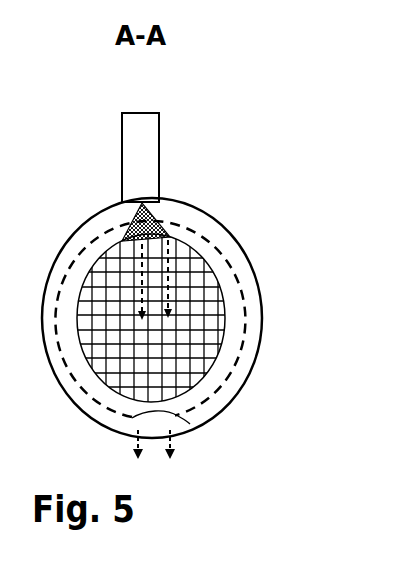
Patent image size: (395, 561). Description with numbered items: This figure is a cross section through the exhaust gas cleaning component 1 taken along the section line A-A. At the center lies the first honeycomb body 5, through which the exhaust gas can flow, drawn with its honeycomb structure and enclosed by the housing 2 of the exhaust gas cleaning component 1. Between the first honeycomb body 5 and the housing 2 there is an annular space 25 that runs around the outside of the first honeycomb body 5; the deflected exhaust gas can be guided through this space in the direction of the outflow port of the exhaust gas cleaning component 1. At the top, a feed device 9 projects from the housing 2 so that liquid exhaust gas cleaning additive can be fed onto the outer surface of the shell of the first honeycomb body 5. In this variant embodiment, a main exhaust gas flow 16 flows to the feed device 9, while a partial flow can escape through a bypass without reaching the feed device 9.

The exhaust gas cleaning component 1 is at (100, 132).
The housing 2 is at (197, 202).
The first honeycomb body 5 is at (209, 270).
The feed device 9 is at (159, 149).
The main exhaust gas flow 16 is at (203, 404).
The annular space 25 is at (73, 383).